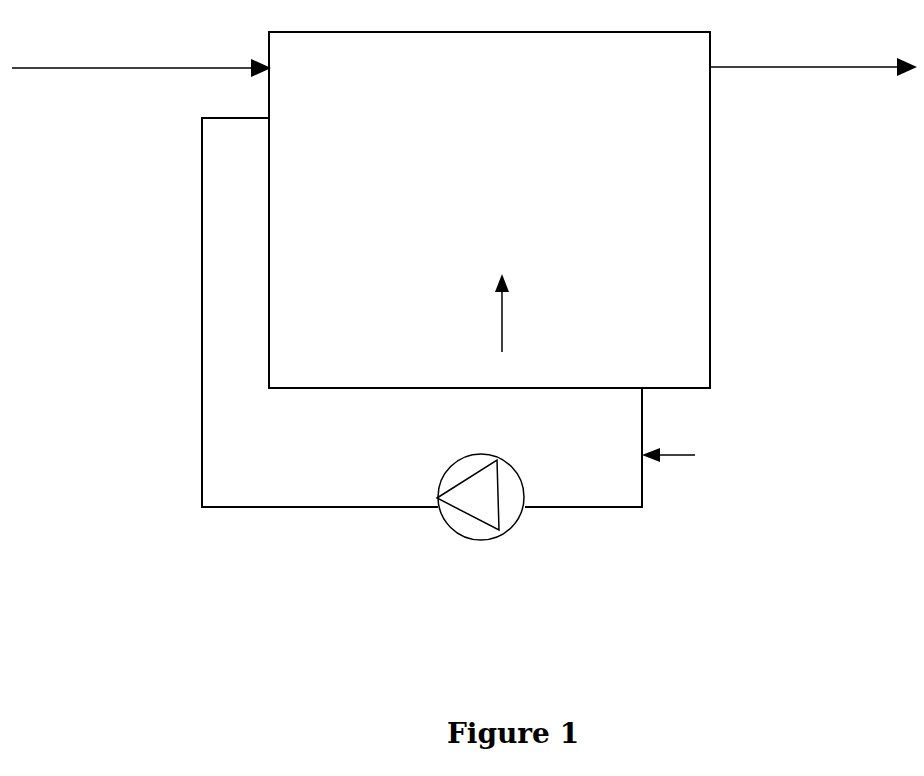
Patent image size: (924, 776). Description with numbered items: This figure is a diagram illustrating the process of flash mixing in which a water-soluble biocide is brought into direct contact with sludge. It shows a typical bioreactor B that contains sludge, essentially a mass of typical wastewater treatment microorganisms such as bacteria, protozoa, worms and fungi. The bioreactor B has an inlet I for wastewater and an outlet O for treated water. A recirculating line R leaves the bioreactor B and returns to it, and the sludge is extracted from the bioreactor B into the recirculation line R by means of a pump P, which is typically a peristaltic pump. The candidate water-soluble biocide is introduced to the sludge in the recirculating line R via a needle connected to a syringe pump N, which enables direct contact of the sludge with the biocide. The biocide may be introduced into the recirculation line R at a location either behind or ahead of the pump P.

The bioreactor B is at (490, 208).
The inlet I is at (141, 53).
The outlet O is at (813, 54).
The recirculating line R is at (292, 535).
The pump P is at (480, 540).
The syringe pump N is at (686, 462).